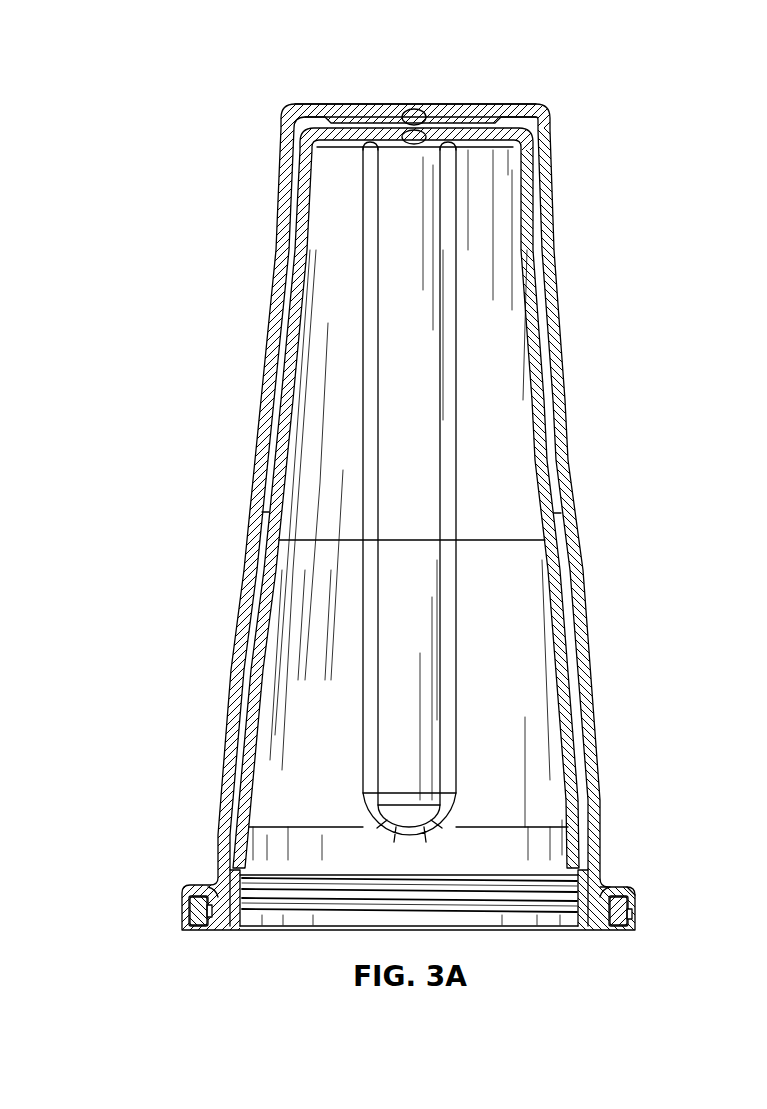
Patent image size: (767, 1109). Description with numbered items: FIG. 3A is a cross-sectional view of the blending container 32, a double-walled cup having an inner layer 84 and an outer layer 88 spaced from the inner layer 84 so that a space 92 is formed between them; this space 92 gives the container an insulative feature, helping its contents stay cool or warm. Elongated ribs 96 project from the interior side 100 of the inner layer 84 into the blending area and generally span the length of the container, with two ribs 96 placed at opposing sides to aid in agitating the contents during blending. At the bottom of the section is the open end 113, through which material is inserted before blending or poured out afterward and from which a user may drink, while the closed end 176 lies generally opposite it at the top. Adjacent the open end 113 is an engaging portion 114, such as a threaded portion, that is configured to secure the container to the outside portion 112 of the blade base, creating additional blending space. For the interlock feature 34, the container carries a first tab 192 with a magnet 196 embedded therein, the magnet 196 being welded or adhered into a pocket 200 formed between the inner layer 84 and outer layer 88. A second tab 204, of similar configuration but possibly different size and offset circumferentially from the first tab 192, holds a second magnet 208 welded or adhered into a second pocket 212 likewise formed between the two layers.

The blending container 32 is at (231, 100).
The closed end 176 is at (412, 106).
The elongated ribs 96 is at (450, 355).
The interior side 100 is at (272, 641).
The inner layer 84 is at (255, 692).
The space 92 is at (242, 737).
The outside portion 112 is at (216, 784).
The outer layer 88 is at (222, 812).
The pocket 200 is at (195, 892).
The magnet 196 is at (198, 910).
The interlock feature 34 is at (162, 948).
The first tab 192 is at (216, 905).
The open end 113 is at (497, 930).
The engaging portion 114 is at (550, 882).
The second tab 204 is at (626, 882).
The second magnet 208 is at (628, 913).
The second pocket 212 is at (603, 913).